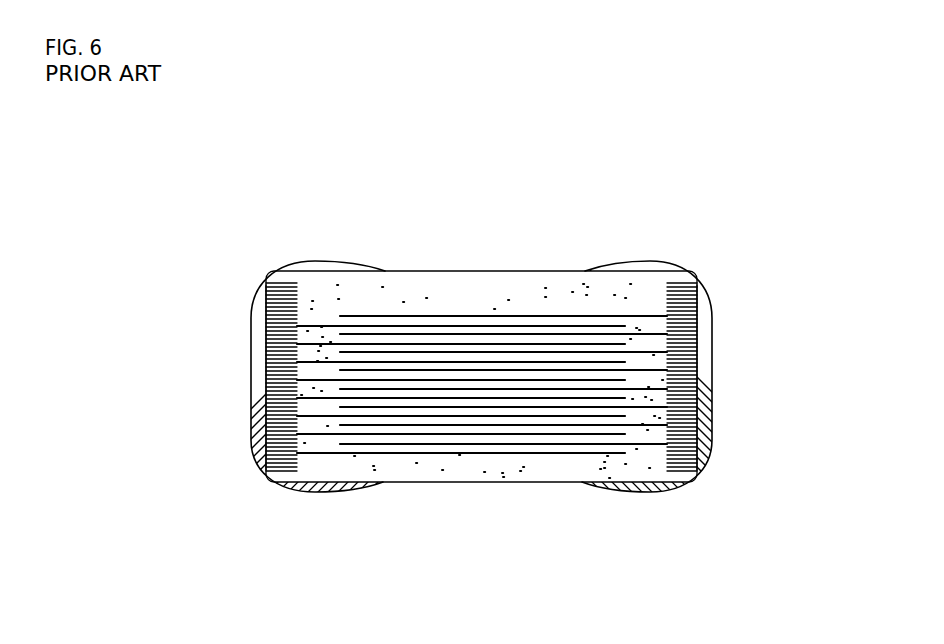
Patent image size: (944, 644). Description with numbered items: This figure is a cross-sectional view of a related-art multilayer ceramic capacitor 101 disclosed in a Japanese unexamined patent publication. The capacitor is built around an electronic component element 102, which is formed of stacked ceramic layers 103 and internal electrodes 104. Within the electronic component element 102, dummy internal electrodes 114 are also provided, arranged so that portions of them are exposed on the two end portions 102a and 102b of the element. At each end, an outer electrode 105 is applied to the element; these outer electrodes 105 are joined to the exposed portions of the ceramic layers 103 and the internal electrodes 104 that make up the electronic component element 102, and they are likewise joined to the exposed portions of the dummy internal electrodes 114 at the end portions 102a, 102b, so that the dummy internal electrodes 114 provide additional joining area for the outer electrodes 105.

The multilayer ceramic capacitor 101 is at (291, 150).
The electronic component element 102 is at (548, 270).
The end portion 102a is at (268, 427).
The end portion 102b is at (700, 412).
The ceramic layer 103 is at (406, 316).
The internal electrode 104 is at (415, 453).
The outer electrode 105 is at (251, 338).
The dummy internal electrode 114 is at (295, 475).